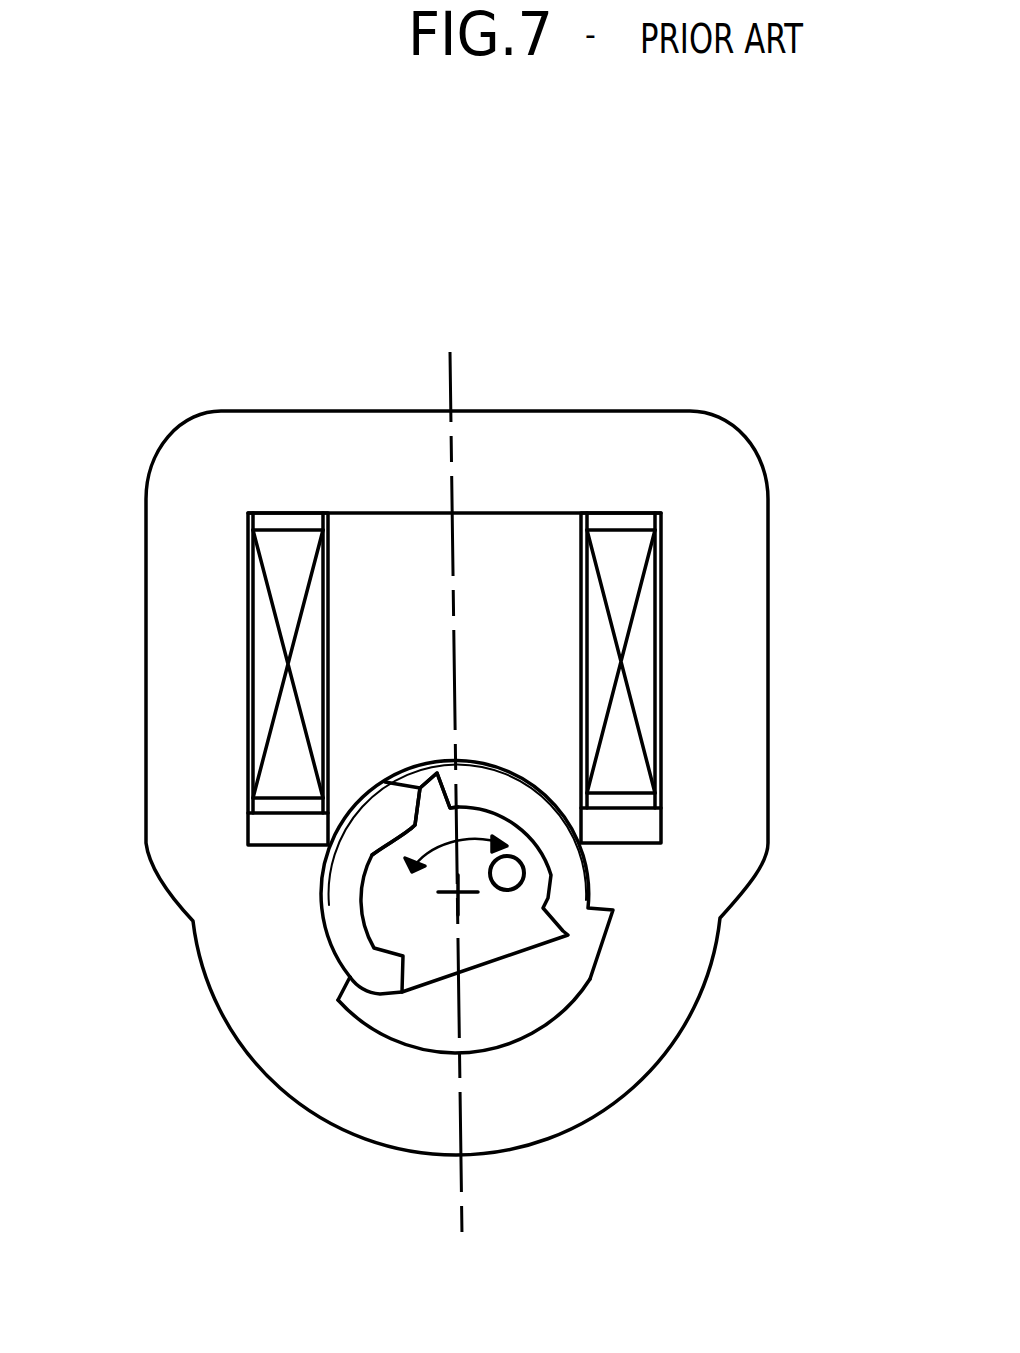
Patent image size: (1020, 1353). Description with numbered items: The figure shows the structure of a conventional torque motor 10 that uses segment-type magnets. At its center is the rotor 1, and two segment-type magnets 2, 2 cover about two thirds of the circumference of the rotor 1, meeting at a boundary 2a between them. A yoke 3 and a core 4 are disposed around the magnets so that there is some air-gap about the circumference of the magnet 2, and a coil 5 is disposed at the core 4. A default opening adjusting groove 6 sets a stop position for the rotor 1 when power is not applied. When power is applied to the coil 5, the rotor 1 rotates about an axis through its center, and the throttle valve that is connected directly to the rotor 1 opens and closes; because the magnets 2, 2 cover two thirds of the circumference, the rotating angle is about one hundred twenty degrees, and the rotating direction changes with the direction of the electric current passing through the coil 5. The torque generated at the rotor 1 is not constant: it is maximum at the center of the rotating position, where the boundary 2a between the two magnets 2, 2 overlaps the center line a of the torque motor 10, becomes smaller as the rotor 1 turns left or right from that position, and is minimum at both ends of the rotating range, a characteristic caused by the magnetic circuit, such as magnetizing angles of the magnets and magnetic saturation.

The torque motor 10 is at (282, 372).
The rotor 1 is at (420, 923).
The segment-type magnet 2 is at (348, 917).
The boundary between the two magnets 2a is at (432, 763).
The yoke 3 is at (708, 637).
The core 4 is at (373, 588).
The coil 5 is at (630, 553).
The default opening adjusting groove 6 is at (522, 1018).
The center line a is at (453, 380).